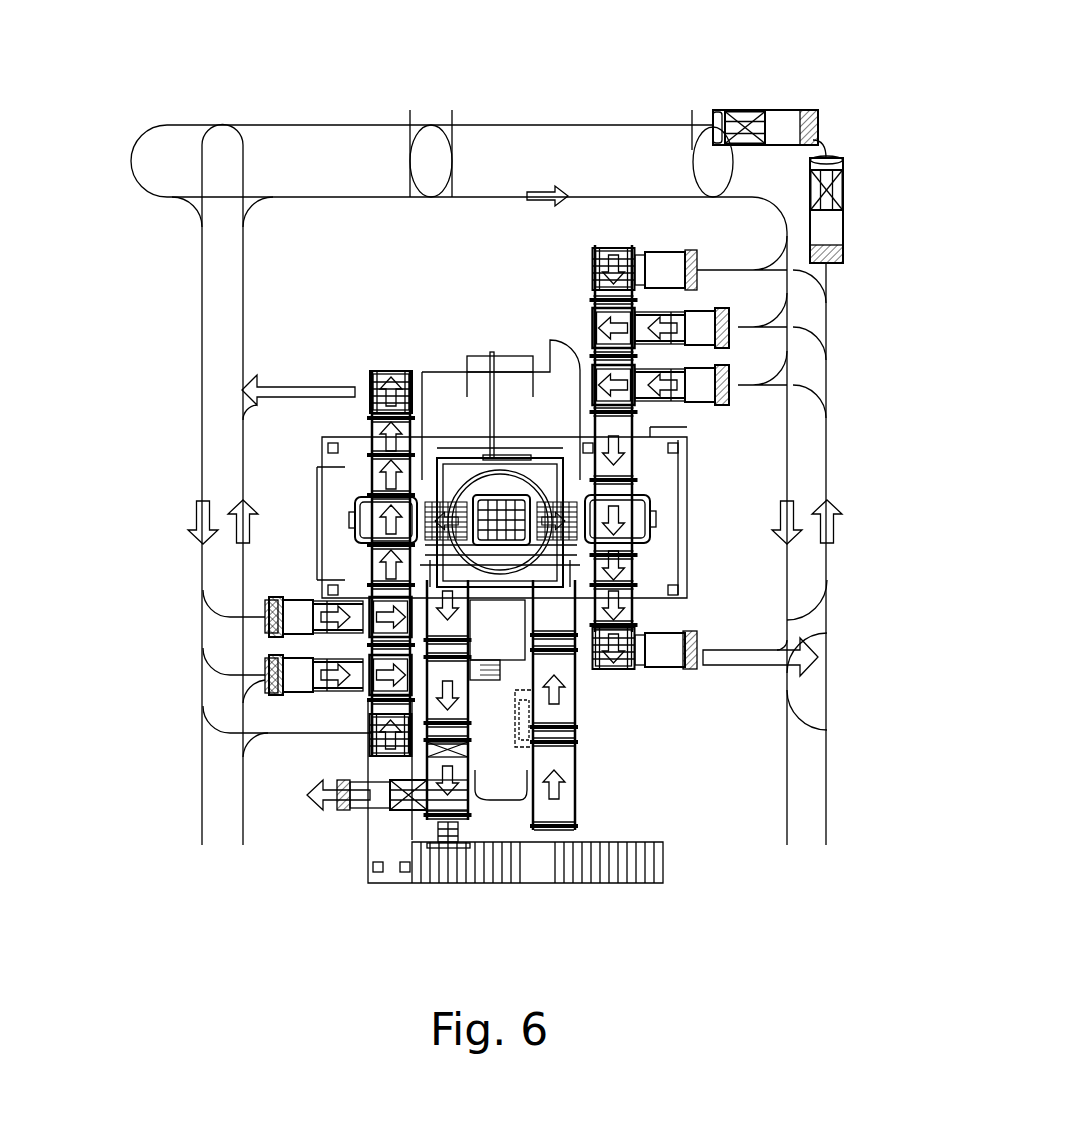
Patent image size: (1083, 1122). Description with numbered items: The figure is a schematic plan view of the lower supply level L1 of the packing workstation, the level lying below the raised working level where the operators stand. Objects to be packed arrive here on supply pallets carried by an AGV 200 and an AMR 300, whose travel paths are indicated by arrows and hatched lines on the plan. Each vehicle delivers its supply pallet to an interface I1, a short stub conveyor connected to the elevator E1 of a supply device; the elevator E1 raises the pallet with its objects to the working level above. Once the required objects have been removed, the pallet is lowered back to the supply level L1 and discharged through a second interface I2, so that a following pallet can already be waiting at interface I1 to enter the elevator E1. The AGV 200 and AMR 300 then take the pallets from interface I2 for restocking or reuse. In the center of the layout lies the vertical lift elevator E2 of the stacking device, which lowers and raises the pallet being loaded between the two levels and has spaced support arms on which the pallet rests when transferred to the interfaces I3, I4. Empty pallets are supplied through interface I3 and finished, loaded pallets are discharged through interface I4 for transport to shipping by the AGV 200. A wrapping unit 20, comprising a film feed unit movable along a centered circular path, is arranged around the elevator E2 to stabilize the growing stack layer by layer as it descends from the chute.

The lower supply level L1 is at (170, 228).
The AGV 200 is at (810, 102).
The AMR 300 is at (262, 683).
The vertical lift elevator E2 is at (502, 549).
The wrapping unit 20 is at (462, 428).
The elevator E1 is at (333, 514).
The interface I1 is at (712, 296).
The second interface I2 is at (360, 368).
The interface I3 is at (555, 858).
The interface I4 is at (447, 858).